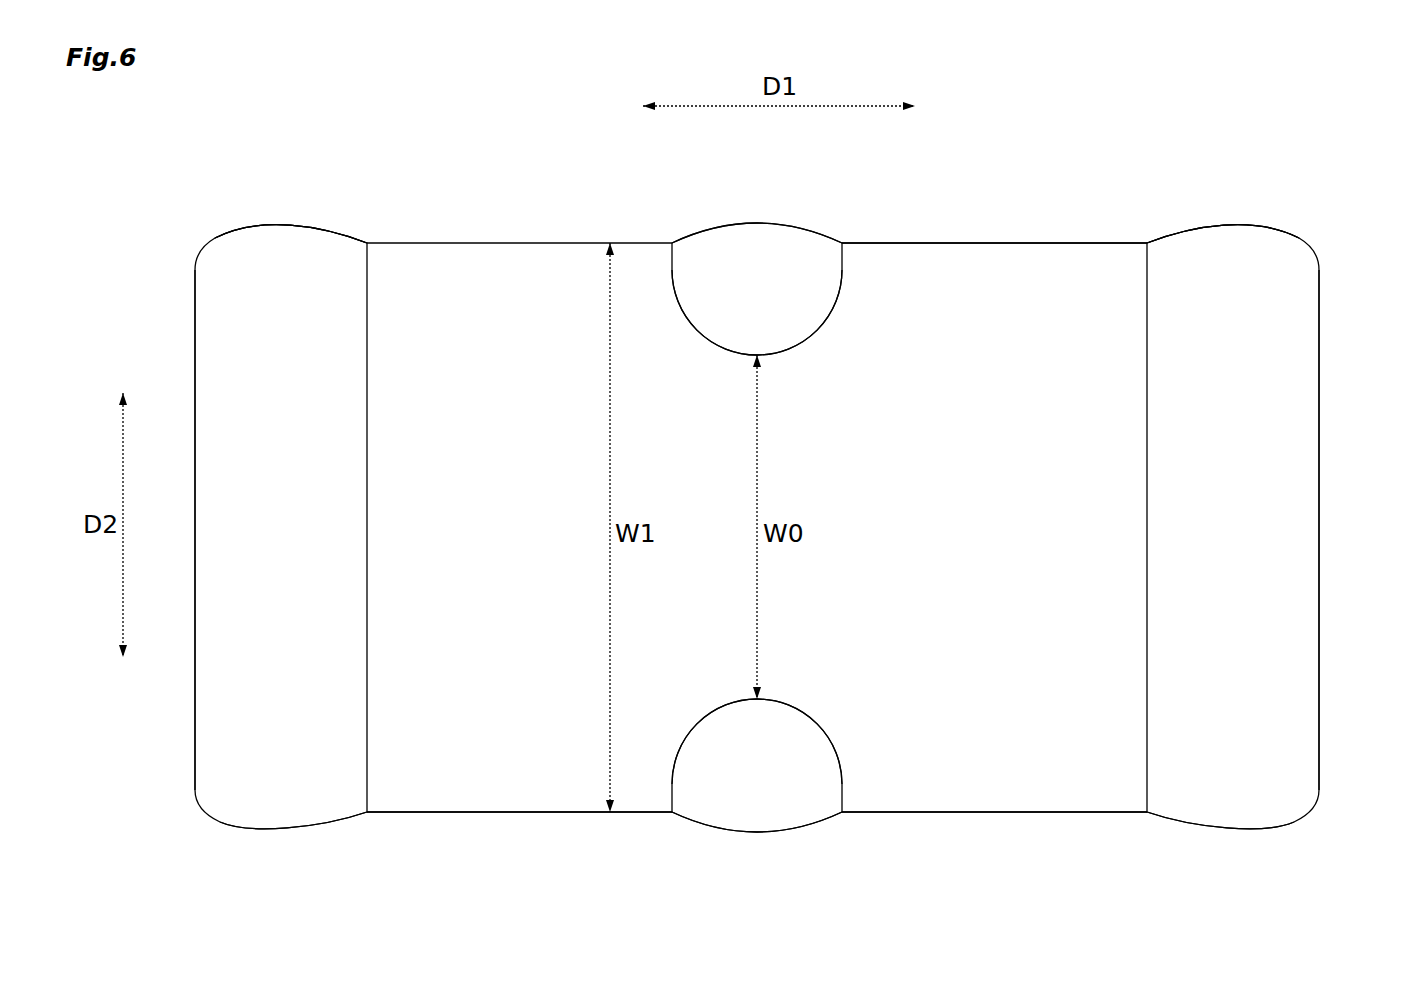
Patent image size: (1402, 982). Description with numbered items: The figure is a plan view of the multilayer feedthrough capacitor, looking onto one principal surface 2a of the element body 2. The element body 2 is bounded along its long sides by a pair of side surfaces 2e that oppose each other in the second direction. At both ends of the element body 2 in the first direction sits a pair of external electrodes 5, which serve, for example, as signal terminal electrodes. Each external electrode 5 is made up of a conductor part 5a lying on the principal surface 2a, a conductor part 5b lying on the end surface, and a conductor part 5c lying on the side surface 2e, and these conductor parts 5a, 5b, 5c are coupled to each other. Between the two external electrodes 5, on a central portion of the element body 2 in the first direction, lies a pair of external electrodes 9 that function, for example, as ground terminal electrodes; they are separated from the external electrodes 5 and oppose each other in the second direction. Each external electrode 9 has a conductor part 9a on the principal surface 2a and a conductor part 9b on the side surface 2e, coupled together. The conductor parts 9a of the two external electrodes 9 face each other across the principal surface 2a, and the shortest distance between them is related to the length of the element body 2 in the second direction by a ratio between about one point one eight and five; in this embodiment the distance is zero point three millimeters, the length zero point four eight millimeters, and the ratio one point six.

The element body 2 is at (952, 818).
The principal surface 2a is at (500, 770).
The side surface 2e is at (964, 242).
The external electrode 5 is at (212, 230).
The conductor part 5a is at (272, 285).
The conductor part 5b is at (195, 573).
The conductor part 5c is at (292, 222).
The external electrode 9 is at (761, 220).
The conductor part 9a is at (790, 258).
The conductor part 9b is at (722, 226).